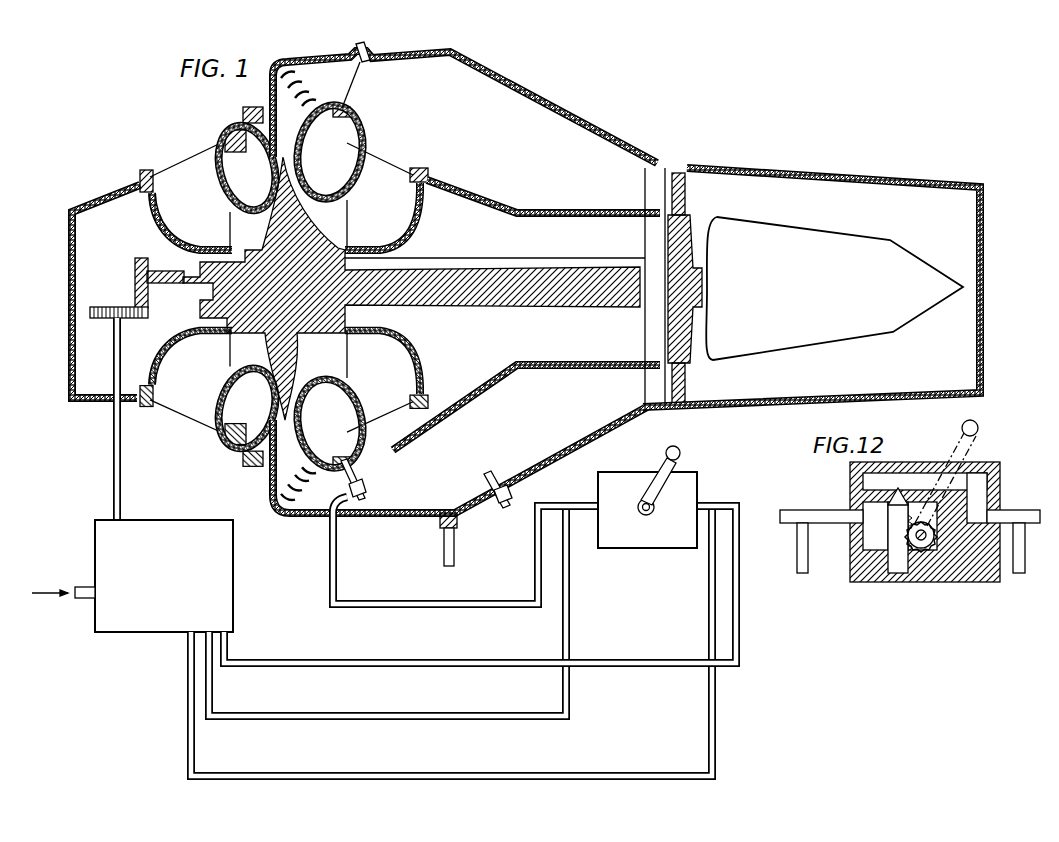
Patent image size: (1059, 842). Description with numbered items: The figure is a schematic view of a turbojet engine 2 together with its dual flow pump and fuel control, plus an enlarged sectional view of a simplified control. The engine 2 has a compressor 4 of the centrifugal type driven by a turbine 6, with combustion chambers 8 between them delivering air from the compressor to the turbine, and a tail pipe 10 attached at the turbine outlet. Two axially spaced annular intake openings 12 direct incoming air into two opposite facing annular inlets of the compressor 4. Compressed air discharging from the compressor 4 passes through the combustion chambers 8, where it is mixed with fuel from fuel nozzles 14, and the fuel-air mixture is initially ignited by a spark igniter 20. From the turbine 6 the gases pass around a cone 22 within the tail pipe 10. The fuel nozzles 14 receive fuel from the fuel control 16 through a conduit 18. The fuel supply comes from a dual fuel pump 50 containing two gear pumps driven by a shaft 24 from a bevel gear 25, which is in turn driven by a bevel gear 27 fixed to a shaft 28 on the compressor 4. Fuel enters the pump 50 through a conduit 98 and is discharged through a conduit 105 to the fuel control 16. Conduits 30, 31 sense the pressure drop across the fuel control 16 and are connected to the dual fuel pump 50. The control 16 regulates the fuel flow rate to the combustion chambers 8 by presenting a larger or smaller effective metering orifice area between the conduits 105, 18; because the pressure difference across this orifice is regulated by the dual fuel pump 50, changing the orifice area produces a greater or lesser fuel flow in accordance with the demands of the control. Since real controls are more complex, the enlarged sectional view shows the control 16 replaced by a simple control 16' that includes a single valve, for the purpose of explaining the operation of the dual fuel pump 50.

In FIG. 1, the turbojet engine 2 is at (68, 222).
In FIG. 1, the compressor 4 is at (283, 262).
In FIG. 1, the turbine 6 is at (666, 250).
In FIG. 1, the combustion chambers 8 is at (552, 127).
In FIG. 1, the tail pipe 10 is at (896, 193).
In FIG. 1, the annular intake openings 12 is at (190, 153).
In FIG. 1, the fuel nozzles 14 is at (367, 488).
In FIG. 1, the fuel control 16 is at (670, 497).
In FIG. 12, the simple control 16' is at (963, 486).
In FIG. 1, the conduit 18 is at (340, 562).
In FIG. 12, the conduit 18 is at (798, 510).
In FIG. 1, the spark igniter 20 is at (500, 473).
In FIG. 1, the cone 22 is at (753, 226).
In FIG. 1, the shaft 24 is at (112, 470).
In FIG. 1, the bevel gear 25 is at (110, 287).
In FIG. 1, the bevel gear 27 is at (135, 263).
In FIG. 1, the shaft 28 is at (176, 292).
In FIG. 1, the conduit 30 is at (692, 777).
In FIG. 12, the conduit 30 is at (1023, 577).
In FIG. 1, the conduit 31 is at (570, 585).
In FIG. 12, the conduit 31 is at (797, 553).
In FIG. 1, the dual fuel pump 50 is at (130, 630).
In FIG. 1, the conduit 98 is at (90, 585).
In FIG. 1, the conduit 105 is at (452, 652).
In FIG. 12, the conduit 105 is at (743, 517).